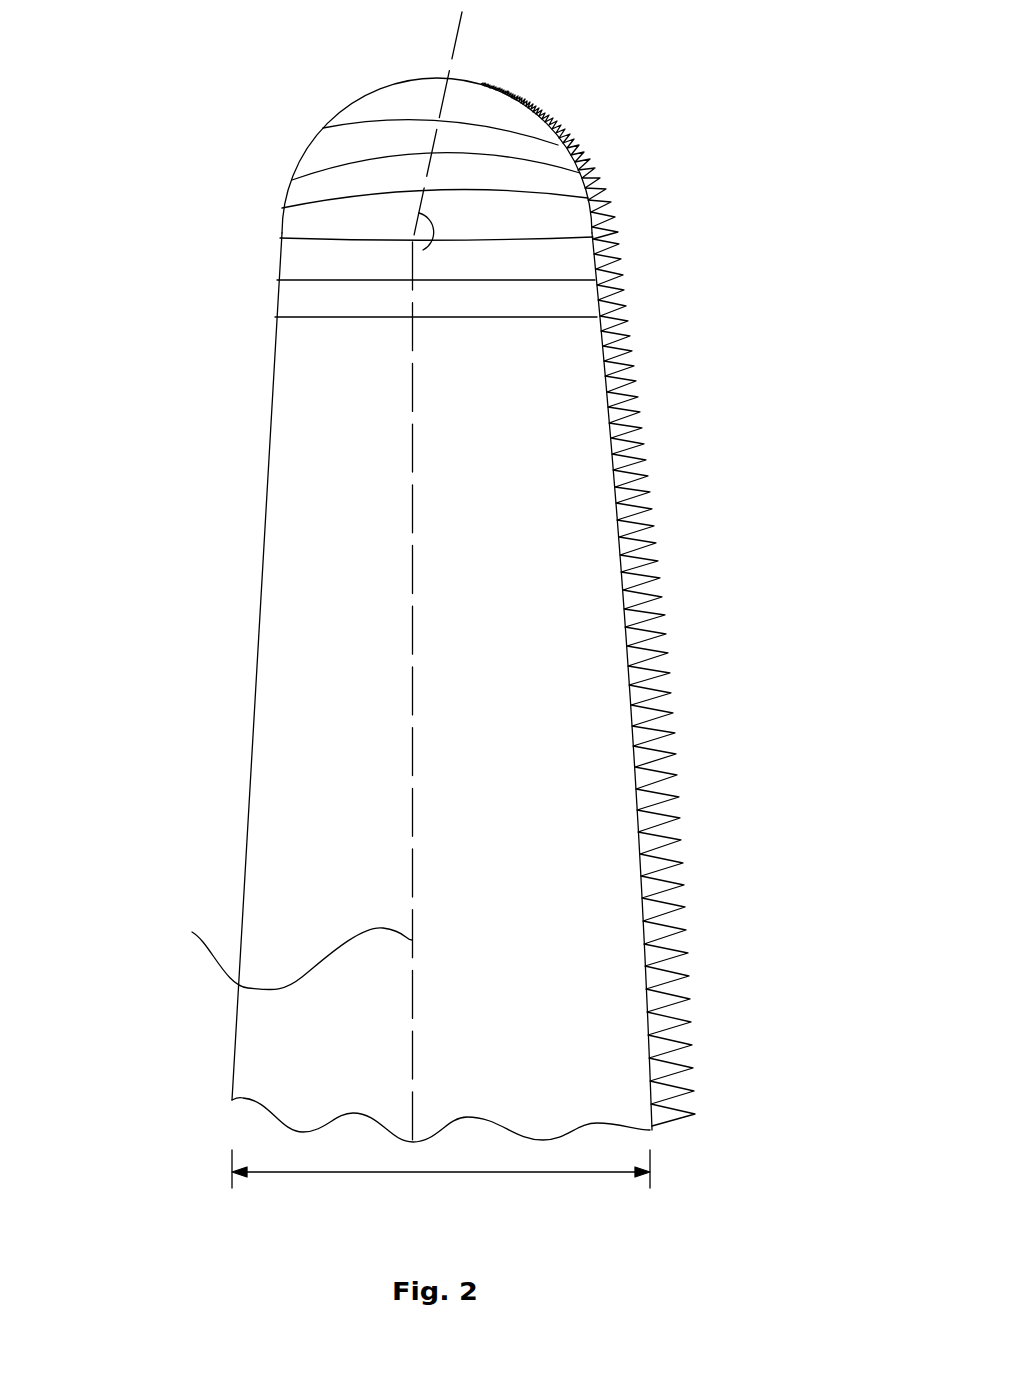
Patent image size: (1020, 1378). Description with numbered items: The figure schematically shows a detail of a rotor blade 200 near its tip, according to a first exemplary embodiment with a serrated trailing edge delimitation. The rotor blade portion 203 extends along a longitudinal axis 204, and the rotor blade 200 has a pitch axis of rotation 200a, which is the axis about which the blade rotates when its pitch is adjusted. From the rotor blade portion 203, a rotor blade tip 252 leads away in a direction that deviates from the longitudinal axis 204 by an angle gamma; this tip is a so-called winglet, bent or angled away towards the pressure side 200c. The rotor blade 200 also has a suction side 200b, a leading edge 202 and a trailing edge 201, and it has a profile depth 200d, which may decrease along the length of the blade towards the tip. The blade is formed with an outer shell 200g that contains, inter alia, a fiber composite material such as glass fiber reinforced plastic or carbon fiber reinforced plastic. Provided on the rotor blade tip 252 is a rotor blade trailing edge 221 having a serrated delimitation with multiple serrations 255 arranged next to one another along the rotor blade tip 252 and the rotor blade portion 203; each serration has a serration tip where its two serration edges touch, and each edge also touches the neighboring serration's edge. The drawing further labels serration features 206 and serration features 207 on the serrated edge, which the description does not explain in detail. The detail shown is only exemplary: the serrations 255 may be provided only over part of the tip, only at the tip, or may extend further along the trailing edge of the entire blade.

The rotor blade 200 is at (303, 600).
The pitch axis of rotation 200a is at (412, 712).
The suction side 200b is at (315, 722).
The pressure side 200c is at (205, 1030).
The profile depth 200d is at (441, 1183).
The outer shell 200g is at (266, 1068).
The trailing edge 201 is at (697, 973).
The leading edge 202 is at (264, 507).
The rotor blade portion 203 is at (260, 877).
The longitudinal axis 204 is at (273, 950).
The tooth flank 206 is at (624, 298).
The tooth root 207 is at (655, 485).
The rotor blade trailing edge 221 is at (640, 205).
The rotor blade tip 252 is at (323, 160).
The serrations 255 is at (613, 296).